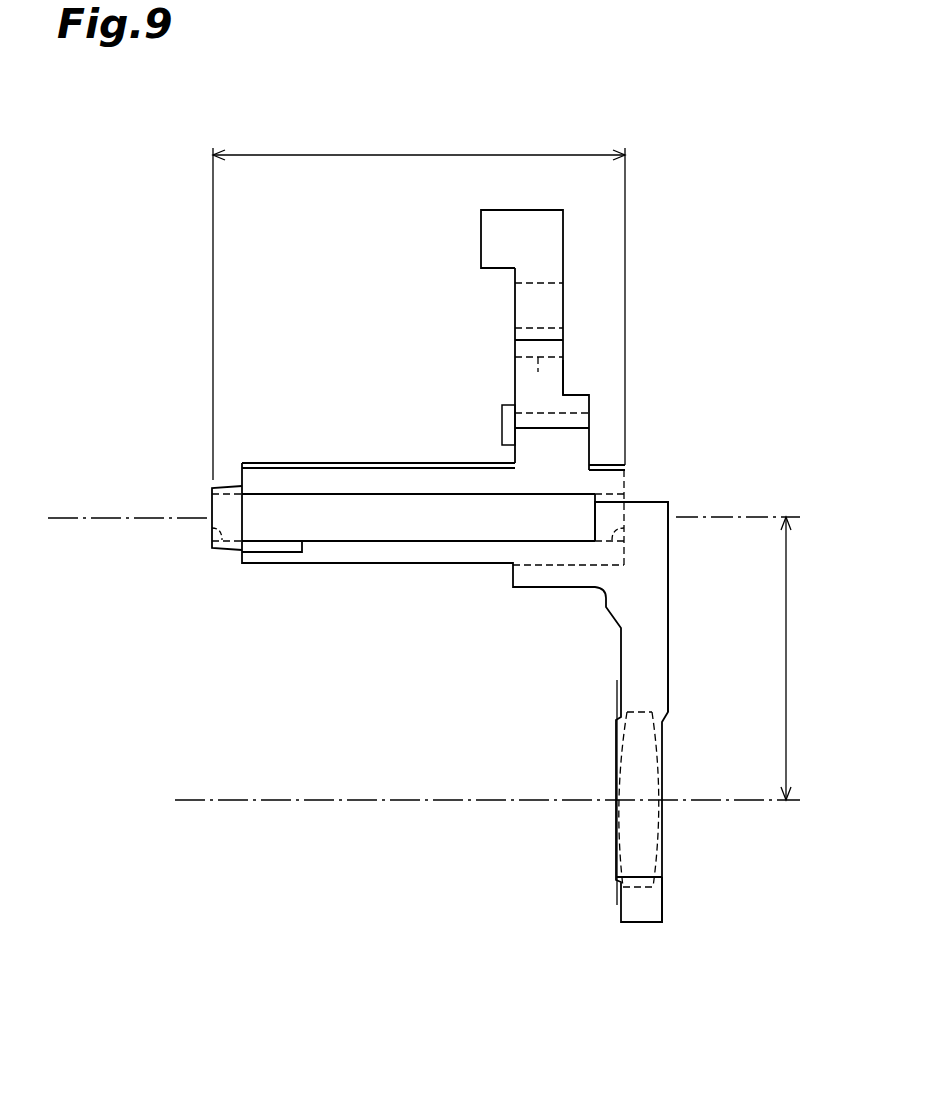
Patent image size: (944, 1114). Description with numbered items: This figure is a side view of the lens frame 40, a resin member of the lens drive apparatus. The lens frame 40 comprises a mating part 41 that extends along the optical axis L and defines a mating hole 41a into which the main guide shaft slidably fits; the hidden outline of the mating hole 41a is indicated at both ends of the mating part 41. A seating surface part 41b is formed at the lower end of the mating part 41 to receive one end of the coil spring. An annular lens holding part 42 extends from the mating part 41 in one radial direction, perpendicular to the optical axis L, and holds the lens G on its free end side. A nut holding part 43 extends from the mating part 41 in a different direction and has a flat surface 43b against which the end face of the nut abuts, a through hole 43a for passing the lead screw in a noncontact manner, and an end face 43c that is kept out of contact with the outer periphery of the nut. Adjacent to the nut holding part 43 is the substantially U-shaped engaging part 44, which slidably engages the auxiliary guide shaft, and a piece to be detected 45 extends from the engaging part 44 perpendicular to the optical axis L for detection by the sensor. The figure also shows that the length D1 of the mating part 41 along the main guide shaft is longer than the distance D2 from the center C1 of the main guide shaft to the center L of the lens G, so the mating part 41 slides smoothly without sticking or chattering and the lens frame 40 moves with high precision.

The lens frame 40 is at (678, 447).
The mating part 41 is at (432, 577).
The mating hole 41a is at (210, 528).
The seating surface part 41b is at (242, 559).
The lens holding part 42 is at (652, 903).
The nut holding part 43 is at (570, 362).
The through hole 43a is at (538, 372).
The flat surface 43b is at (567, 386).
The end face 43c is at (576, 390).
The engaging part 44 is at (508, 310).
The piece to be detected 45 is at (493, 237).
The lens G is at (663, 870).
The optical axis L is at (460, 810).
The center of the main guide shaft C1 is at (100, 517).
The length of the mating part D1 is at (419, 304).
The distance from the center of the main guide shaft to the center of the lens D2 is at (752, 658).